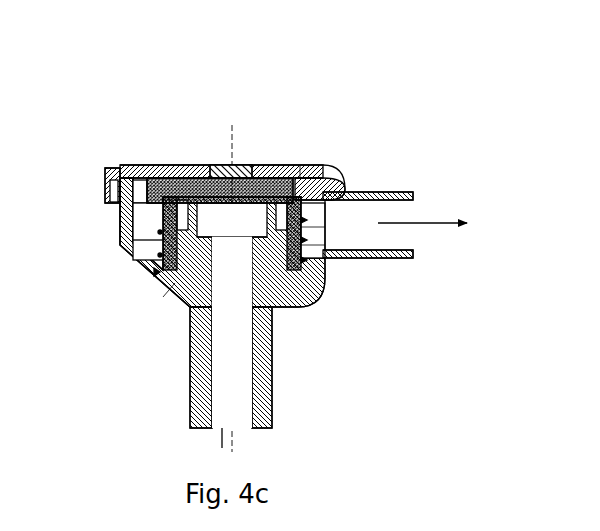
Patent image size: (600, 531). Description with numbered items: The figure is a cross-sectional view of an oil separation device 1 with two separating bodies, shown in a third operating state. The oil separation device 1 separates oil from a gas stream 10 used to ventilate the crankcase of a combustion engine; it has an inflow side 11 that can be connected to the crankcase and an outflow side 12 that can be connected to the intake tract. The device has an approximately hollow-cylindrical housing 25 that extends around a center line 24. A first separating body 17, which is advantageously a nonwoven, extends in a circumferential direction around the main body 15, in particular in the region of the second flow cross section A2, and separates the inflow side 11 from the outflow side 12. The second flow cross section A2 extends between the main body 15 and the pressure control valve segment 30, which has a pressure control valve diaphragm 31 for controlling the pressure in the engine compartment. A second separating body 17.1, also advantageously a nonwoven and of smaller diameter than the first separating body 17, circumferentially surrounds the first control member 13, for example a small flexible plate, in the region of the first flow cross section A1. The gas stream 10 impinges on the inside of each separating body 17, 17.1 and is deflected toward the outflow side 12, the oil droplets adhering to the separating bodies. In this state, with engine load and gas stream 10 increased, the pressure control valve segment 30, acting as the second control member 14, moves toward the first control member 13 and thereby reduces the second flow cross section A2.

The oil separation device 1 is at (197, 70).
The gas stream 10 is at (258, 343).
The inflow side 11 is at (222, 440).
The outflow side 12 is at (445, 222).
The first control member 13 is at (316, 302).
The second control member 14 is at (352, 146).
The main body 15 is at (173, 165).
The first separating body 17 is at (302, 223).
The second separating body 17.1 is at (160, 274).
The center line 24 is at (232, 165).
The housing 25 is at (124, 232).
The pressure control valve segment 30 is at (257, 166).
The pressure control valve diaphragm 31 is at (120, 170).
The first flow cross section A1 is at (165, 297).
The second flow cross section A2 is at (301, 166).